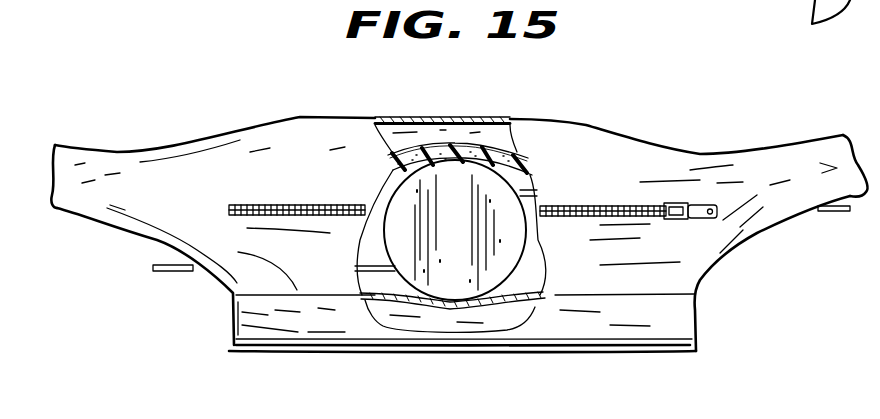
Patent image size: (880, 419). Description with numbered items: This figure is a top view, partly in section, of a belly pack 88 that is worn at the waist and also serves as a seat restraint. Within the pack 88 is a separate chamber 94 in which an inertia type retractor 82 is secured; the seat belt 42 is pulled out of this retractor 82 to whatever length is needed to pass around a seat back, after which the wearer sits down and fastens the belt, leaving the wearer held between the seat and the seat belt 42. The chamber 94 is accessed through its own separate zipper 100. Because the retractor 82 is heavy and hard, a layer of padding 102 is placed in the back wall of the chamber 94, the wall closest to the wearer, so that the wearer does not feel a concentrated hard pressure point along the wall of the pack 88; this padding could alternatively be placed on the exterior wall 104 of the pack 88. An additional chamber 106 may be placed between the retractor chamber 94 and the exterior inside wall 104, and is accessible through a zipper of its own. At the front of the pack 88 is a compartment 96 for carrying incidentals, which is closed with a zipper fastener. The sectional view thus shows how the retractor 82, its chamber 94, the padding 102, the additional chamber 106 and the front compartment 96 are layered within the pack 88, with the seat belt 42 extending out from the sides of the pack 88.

The seat belt 42 is at (157, 272).
The retractor 82 is at (416, 255).
The belly pack 88 is at (626, 140).
The chamber 94 is at (525, 278).
The compartment 96 is at (427, 313).
The zipper 100 is at (645, 210).
The layer of padding 102 is at (473, 150).
The exterior wall 104 is at (392, 122).
The additional chamber 106 is at (420, 136).